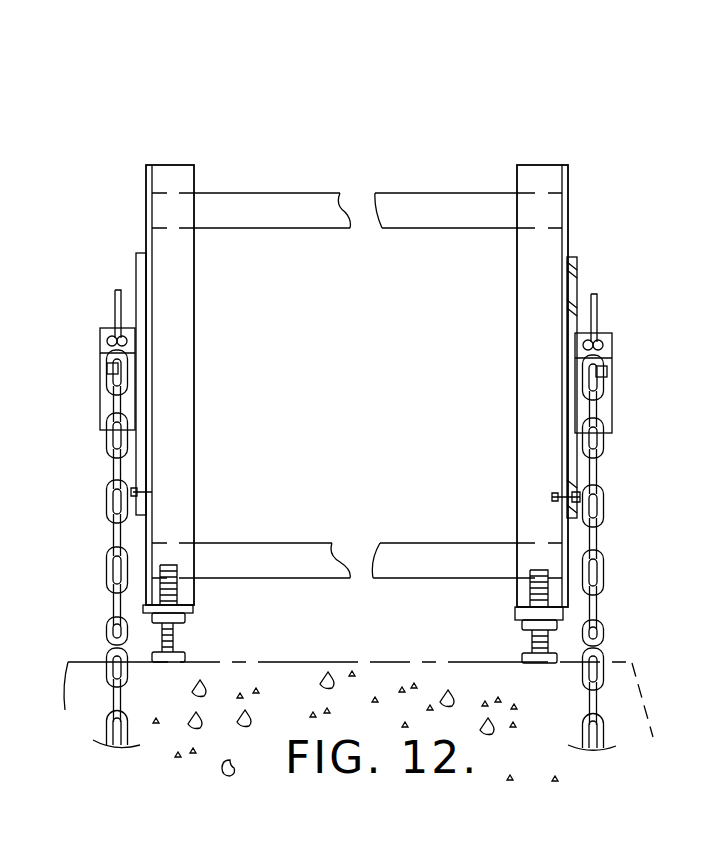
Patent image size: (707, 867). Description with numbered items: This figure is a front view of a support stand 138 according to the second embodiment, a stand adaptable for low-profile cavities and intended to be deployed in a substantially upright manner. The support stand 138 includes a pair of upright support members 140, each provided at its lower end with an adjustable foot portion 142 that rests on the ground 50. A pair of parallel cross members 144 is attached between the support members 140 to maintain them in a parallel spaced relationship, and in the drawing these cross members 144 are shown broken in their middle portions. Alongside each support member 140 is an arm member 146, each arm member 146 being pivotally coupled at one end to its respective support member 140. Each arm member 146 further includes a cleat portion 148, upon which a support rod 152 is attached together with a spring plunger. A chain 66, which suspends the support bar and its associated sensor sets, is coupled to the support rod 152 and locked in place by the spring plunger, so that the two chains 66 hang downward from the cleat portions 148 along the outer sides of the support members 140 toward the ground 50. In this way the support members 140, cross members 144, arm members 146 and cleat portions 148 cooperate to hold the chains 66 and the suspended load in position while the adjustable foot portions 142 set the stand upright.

The support stand 138 is at (422, 137).
The support member 140 is at (160, 183).
The adjustable foot portion 142 is at (178, 648).
The cross member 144 is at (290, 200).
The arm member 146 is at (136, 285).
The cleat portion 148 is at (105, 410).
The support rod 152 is at (115, 308).
The chain 66 is at (113, 608).
The ground 50 is at (650, 735).